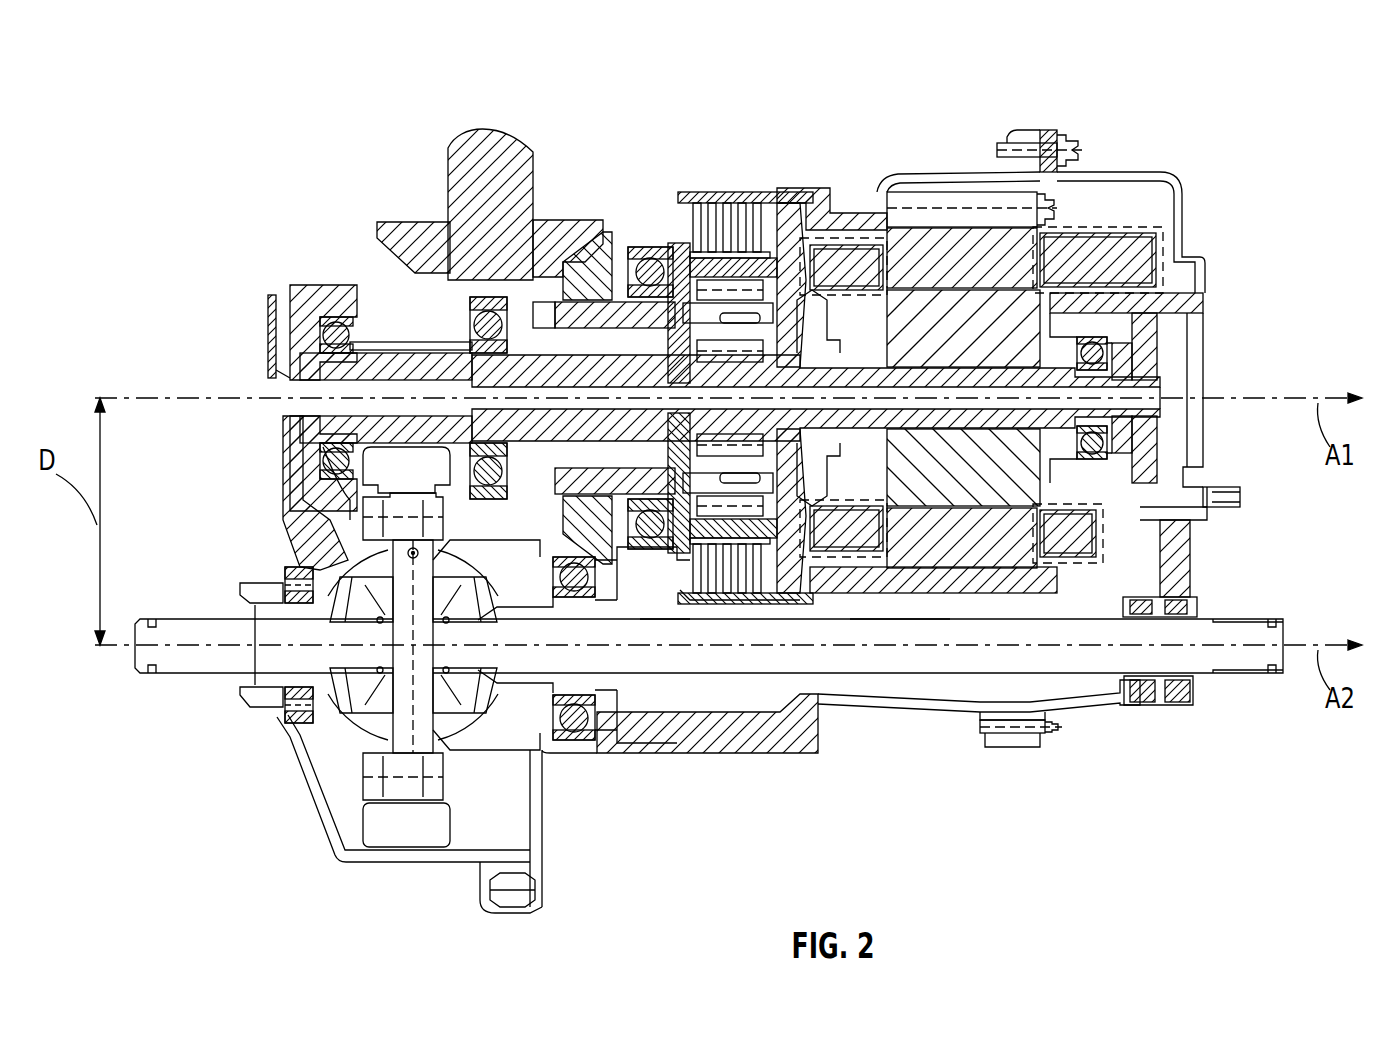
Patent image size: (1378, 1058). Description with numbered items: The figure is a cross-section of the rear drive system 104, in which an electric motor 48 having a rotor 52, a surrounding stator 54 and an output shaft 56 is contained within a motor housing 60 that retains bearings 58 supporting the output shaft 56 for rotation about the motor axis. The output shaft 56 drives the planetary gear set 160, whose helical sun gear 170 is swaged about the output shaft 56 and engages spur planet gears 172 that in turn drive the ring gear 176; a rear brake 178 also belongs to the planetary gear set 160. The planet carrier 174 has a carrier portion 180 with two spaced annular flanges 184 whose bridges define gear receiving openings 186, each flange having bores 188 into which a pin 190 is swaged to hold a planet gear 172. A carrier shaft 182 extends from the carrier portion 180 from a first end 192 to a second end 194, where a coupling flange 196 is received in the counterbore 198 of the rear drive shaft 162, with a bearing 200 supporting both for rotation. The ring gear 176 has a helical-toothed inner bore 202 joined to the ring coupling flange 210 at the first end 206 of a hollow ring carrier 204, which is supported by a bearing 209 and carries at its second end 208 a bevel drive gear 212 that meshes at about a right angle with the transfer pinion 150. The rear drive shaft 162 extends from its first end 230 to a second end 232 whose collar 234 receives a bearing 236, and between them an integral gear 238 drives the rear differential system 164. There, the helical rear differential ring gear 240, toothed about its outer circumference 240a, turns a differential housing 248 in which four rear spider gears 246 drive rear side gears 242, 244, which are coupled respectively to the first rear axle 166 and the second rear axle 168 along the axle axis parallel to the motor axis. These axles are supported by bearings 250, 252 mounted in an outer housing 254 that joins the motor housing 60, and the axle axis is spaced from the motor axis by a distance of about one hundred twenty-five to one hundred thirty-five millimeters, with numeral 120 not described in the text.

The electric motor 48 is at (1186, 246).
The rotor 52 is at (1007, 330).
The stator 54 is at (1098, 250).
The output shaft 56 is at (1158, 382).
The bearings 58 is at (1172, 290).
The motor housing 60 is at (1180, 211).
The rear drive system 104 is at (803, 70).
The input shaft 120 is at (540, 153).
The transfer pinion 150 is at (418, 218).
The planetary gear set 160 is at (812, 188).
The rear drive shaft 162 is at (352, 268).
The rear differential system 164 is at (500, 515).
The first rear axle 166 is at (183, 665).
The second rear axle 168 is at (1243, 658).
The sun gear 170 is at (812, 448).
The planet gears 172 is at (722, 290).
The planet carrier 174 is at (690, 533).
The ring gear 176 is at (660, 650).
The rear brake 178 is at (745, 192).
The carrier portion 180 is at (688, 326).
The carrier shaft 182 is at (538, 320).
The annular flanges 184 is at (743, 300).
The gear receiving openings 186 is at (760, 560).
The bores 188 is at (660, 362).
The pin 190 is at (832, 243).
The first end 192 is at (745, 437).
The second end 194 is at (532, 448).
The coupling flange 196 is at (500, 412).
The counterbore 198 is at (470, 360).
The bearing 200 is at (448, 470).
The inner bore 202 is at (890, 618).
The ring carrier 204 is at (580, 245).
The first end 206 is at (555, 600).
The second end 208 is at (538, 528).
The bearing 209 is at (603, 298).
The ring coupling flange 210 is at (645, 262).
The drive gear 212 is at (620, 612).
The first end 230 is at (520, 345).
The second end 232 is at (300, 400).
The collar 234 is at (290, 474).
The bearing 236 is at (330, 355).
The gear 238 is at (395, 343).
The rear differential ring gear 240 is at (420, 858).
The outer circumference 240a is at (345, 848).
The rear side gear 242 is at (352, 712).
The rear side gear 244 is at (490, 692).
The rear spider gears 246 is at (383, 587).
The differential housing 248 is at (632, 718).
The bearing 250 is at (585, 742).
The bearing 252 is at (298, 742).
The outer housing 254 is at (710, 755).